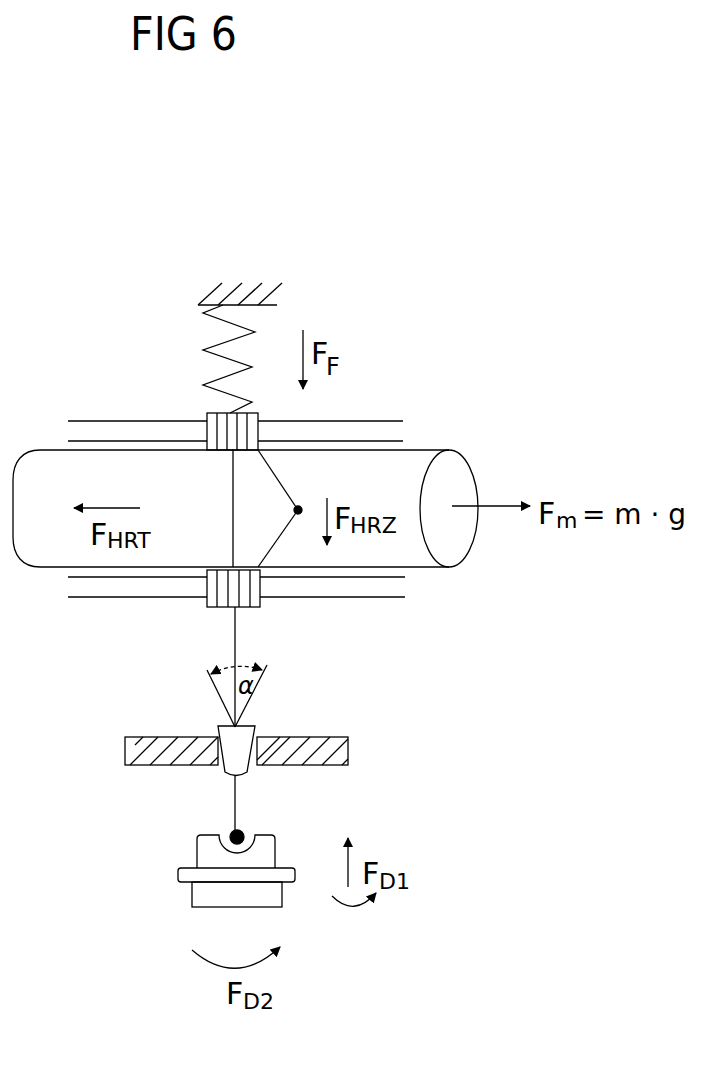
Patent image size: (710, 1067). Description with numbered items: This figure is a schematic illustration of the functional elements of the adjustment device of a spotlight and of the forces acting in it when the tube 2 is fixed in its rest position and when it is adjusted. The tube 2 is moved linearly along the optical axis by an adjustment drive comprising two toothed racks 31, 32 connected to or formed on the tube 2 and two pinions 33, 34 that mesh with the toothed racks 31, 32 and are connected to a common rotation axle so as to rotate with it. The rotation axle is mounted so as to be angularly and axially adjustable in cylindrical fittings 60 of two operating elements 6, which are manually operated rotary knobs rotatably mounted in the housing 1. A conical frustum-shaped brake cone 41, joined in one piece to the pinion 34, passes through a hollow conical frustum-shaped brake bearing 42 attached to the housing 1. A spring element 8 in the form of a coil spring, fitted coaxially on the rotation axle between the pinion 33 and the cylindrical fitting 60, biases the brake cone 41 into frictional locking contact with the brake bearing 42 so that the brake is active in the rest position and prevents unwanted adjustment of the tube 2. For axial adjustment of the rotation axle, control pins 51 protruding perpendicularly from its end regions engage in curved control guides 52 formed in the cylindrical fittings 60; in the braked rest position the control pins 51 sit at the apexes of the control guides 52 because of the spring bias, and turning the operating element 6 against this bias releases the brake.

The housing 1 is at (207, 286).
The spring element 8 is at (210, 340).
The pinion 33 is at (207, 415).
The toothed rack 31 is at (372, 418).
The tube 2 is at (417, 472).
The pinion 34 is at (207, 605).
The toothed rack 32 is at (380, 587).
The brake cone 41 is at (218, 735).
The brake bearing 42 is at (335, 737).
The control pin 51 is at (229, 834).
The control guide 52 is at (205, 846).
The cylindrical fitting 60 is at (178, 877).
The operating element 6 is at (205, 895).